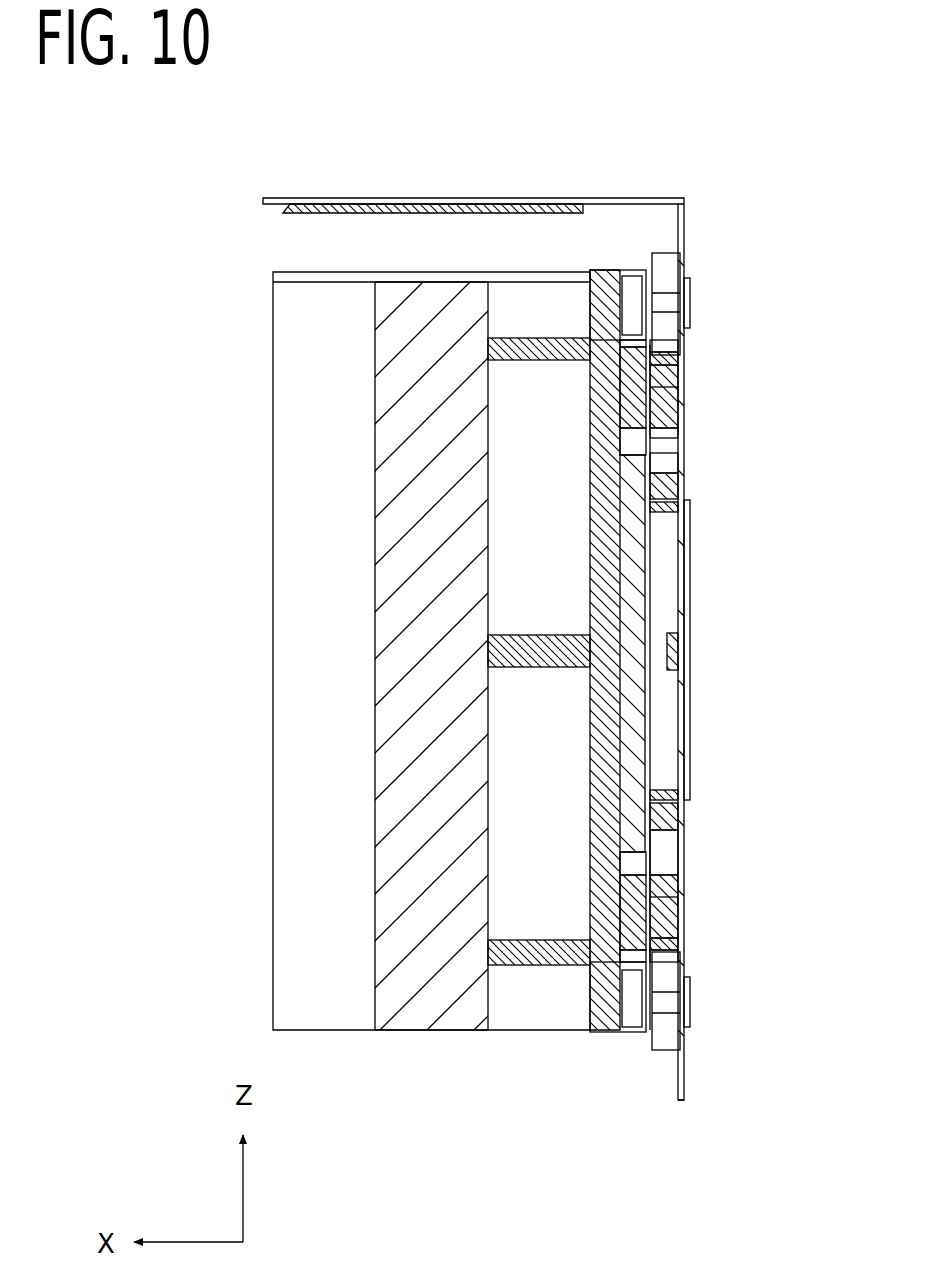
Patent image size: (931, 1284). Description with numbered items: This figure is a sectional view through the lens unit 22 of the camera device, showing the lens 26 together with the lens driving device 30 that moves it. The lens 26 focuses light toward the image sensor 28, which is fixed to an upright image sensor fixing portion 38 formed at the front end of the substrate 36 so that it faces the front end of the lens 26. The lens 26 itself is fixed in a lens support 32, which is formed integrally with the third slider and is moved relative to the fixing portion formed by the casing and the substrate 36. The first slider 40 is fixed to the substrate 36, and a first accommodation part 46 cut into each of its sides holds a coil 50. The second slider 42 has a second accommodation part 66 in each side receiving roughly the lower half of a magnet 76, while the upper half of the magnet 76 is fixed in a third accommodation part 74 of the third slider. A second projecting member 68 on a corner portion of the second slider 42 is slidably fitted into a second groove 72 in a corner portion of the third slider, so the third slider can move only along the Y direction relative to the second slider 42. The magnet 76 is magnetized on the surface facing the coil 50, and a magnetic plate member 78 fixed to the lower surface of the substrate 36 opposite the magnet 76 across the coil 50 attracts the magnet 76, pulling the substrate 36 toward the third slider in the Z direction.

The lens unit 22 is at (344, 170).
The lens 26 is at (273, 851).
The image sensor 28 is at (418, 207).
The lens driving device 30 is at (605, 1040).
The lens support 32 is at (527, 960).
The substrate 36 is at (686, 858).
The image sensor fixing portion 38 is at (515, 199).
The first slider 40 is at (682, 410).
The second slider 42 is at (676, 386).
The first accommodation part 46 is at (676, 352).
The coil 50 is at (667, 257).
The second accommodation part 66 is at (658, 438).
The second projecting member 68 is at (604, 358).
The second groove 72 is at (620, 381).
The third accommodation part 74 is at (603, 518).
The magnet 76 is at (604, 556).
The magnetic plate member 78 is at (692, 302).